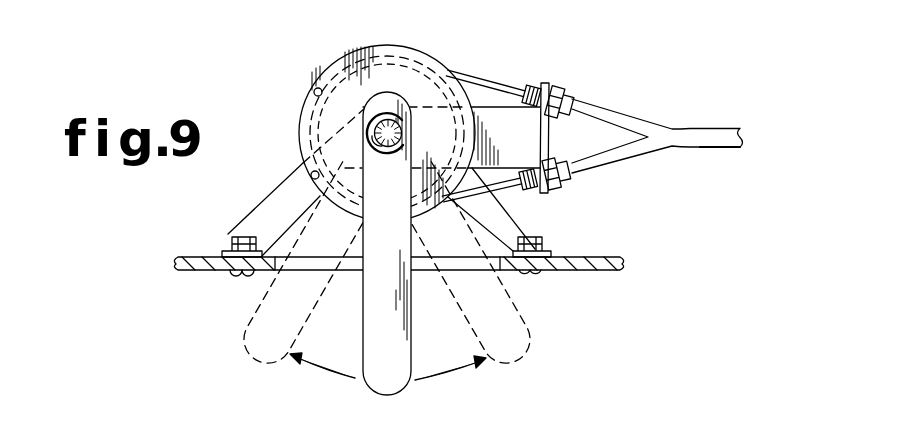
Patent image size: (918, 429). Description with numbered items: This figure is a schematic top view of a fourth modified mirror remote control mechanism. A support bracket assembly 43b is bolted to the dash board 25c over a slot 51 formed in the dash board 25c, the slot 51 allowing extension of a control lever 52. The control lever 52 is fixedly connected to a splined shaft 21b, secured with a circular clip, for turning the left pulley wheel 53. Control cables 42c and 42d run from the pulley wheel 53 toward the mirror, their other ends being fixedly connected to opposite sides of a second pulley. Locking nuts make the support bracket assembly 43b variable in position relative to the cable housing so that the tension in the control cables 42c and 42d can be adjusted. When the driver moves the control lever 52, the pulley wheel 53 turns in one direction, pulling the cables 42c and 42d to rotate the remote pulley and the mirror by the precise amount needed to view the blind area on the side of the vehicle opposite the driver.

The left pulley wheel 53 is at (338, 58).
The control cable 42c is at (490, 80).
The control cable 42d is at (510, 189).
The control lever 52 is at (396, 354).
The splined shaft 21b is at (389, 153).
The support bracket assembly 43b is at (270, 217).
The dash board 25c is at (212, 271).
The slot 51 is at (500, 264).